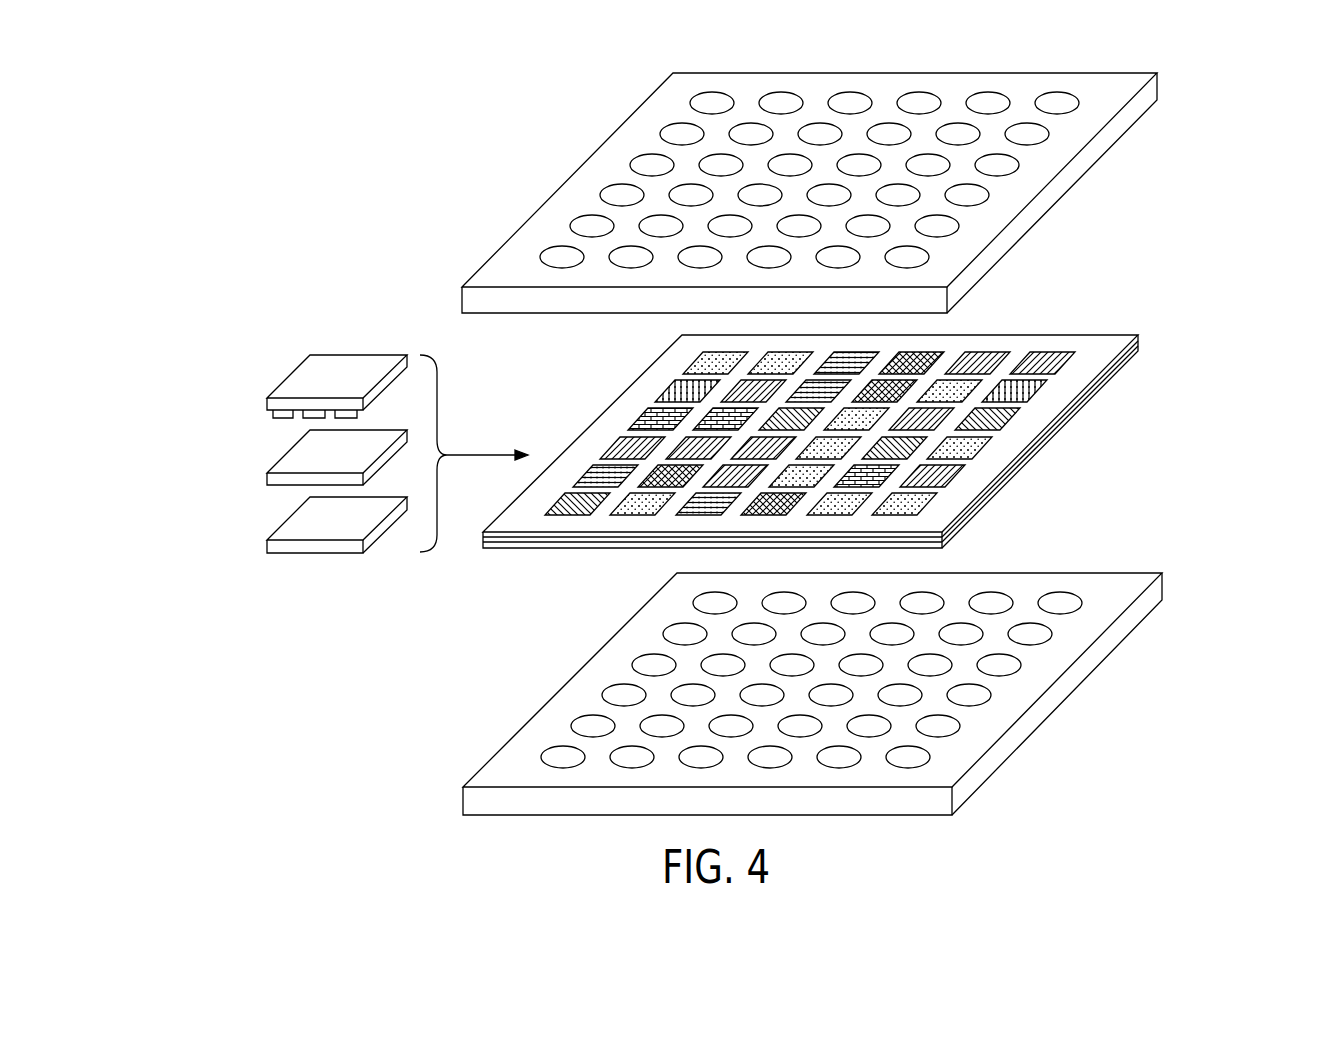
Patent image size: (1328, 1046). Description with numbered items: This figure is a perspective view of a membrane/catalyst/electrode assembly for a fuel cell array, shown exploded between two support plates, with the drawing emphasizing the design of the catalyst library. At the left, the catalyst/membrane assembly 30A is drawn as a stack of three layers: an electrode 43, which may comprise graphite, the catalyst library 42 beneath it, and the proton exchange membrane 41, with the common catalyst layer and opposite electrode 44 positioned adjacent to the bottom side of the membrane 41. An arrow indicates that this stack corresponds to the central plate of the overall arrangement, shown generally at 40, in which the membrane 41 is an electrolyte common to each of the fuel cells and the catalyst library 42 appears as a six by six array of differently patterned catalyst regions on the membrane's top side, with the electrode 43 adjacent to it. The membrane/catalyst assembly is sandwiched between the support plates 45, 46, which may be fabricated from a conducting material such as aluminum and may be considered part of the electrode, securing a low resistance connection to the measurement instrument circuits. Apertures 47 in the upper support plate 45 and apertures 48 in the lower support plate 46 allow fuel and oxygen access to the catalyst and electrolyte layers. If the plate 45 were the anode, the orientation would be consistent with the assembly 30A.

The catalyst/membrane assembly 30A is at (162, 343).
The electrolyte assembly 40 is at (1247, 72).
The proton exchange membrane 41 is at (267, 478).
The catalyst library 42 is at (278, 418).
The electrode 43 is at (285, 380).
The common catalyst layer and opposite electrode 44 is at (267, 545).
The support plate 45 is at (597, 168).
The support plate 46 is at (1078, 572).
The apertures 47 is at (712, 103).
The apertures 48 is at (563, 755).